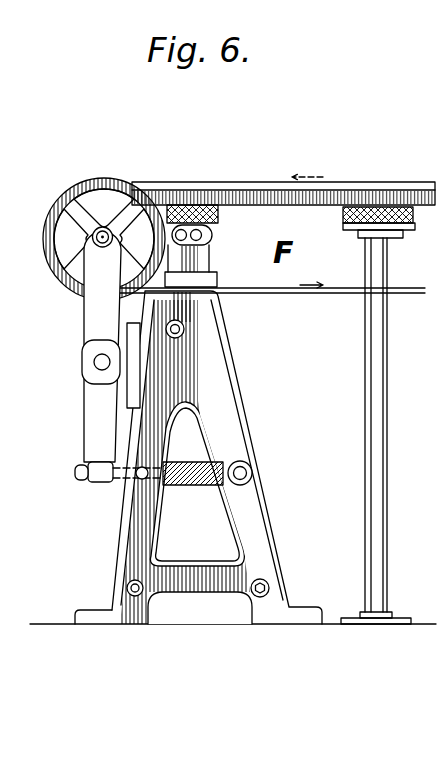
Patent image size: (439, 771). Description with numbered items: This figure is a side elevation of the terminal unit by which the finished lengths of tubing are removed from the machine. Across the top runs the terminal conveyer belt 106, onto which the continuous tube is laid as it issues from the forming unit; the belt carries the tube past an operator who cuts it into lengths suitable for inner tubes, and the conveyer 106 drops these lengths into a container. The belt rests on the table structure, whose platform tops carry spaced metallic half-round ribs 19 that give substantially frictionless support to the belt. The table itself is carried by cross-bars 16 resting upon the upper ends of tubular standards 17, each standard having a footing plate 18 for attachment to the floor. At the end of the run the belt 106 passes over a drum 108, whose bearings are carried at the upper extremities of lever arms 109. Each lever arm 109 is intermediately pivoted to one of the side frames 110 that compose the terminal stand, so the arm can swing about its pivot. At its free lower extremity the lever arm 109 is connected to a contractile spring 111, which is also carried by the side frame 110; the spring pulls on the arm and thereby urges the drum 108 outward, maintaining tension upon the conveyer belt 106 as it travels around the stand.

The terminal conveyer belt 106 is at (230, 183).
The half-round ribs 19 is at (338, 183).
The cross-bars 16 is at (357, 231).
The tubular standards 17 is at (366, 331).
The footing plate 18 is at (350, 618).
The drum 108 is at (95, 169).
The lever arms 109 is at (92, 324).
The side frames 110 is at (212, 347).
The contractile springs 111 is at (205, 486).